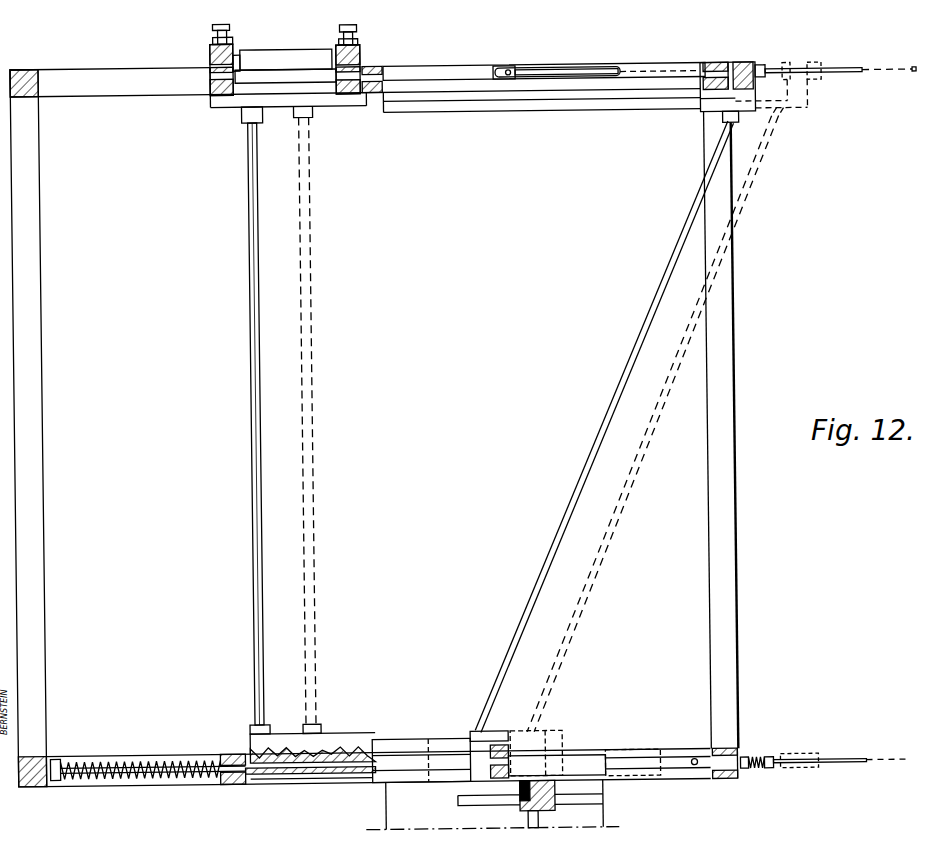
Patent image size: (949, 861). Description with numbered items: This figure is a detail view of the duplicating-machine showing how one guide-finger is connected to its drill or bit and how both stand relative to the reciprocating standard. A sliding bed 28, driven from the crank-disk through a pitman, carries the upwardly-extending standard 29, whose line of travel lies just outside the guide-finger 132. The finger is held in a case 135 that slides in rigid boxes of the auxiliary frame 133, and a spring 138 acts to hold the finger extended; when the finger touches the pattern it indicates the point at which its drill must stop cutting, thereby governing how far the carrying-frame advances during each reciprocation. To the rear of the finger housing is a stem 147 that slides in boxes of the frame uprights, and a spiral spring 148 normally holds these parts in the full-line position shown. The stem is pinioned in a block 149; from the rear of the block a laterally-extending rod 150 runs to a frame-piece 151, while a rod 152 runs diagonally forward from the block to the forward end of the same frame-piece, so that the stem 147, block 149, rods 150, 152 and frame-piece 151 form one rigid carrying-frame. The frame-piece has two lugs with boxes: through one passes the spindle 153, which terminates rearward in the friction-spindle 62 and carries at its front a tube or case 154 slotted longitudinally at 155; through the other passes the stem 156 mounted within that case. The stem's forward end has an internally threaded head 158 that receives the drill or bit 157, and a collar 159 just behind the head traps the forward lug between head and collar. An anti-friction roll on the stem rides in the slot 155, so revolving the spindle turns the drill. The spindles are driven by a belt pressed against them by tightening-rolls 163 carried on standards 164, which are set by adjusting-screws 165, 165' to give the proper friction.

The bed 28 is at (493, 805).
The standard 29 is at (546, 808).
The spindle 62 is at (257, 86).
The guide-finger 132 is at (841, 750).
The auxiliary frame 133 is at (31, 410).
The case 135 is at (660, 763).
The spring 138 is at (744, 764).
The stem 147 is at (224, 761).
The spiral spring 148 is at (110, 758).
The block or frame 149 is at (365, 744).
The rod 150 is at (241, 421).
The frame-piece 151 is at (488, 114).
The rod 152 is at (617, 387).
The spindle 153 is at (405, 76).
The tube or case 154 is at (650, 80).
The slot 155 is at (605, 75).
The stem 156 is at (715, 107).
The drill or bit 157 is at (830, 80).
The head 158 is at (763, 77).
The collar 159 is at (725, 77).
The tightening-roll 163 is at (285, 66).
The standard 164 is at (210, 54).
The adjusting-screw 165 is at (327, 37).
The clamping screw 165' is at (246, 37).